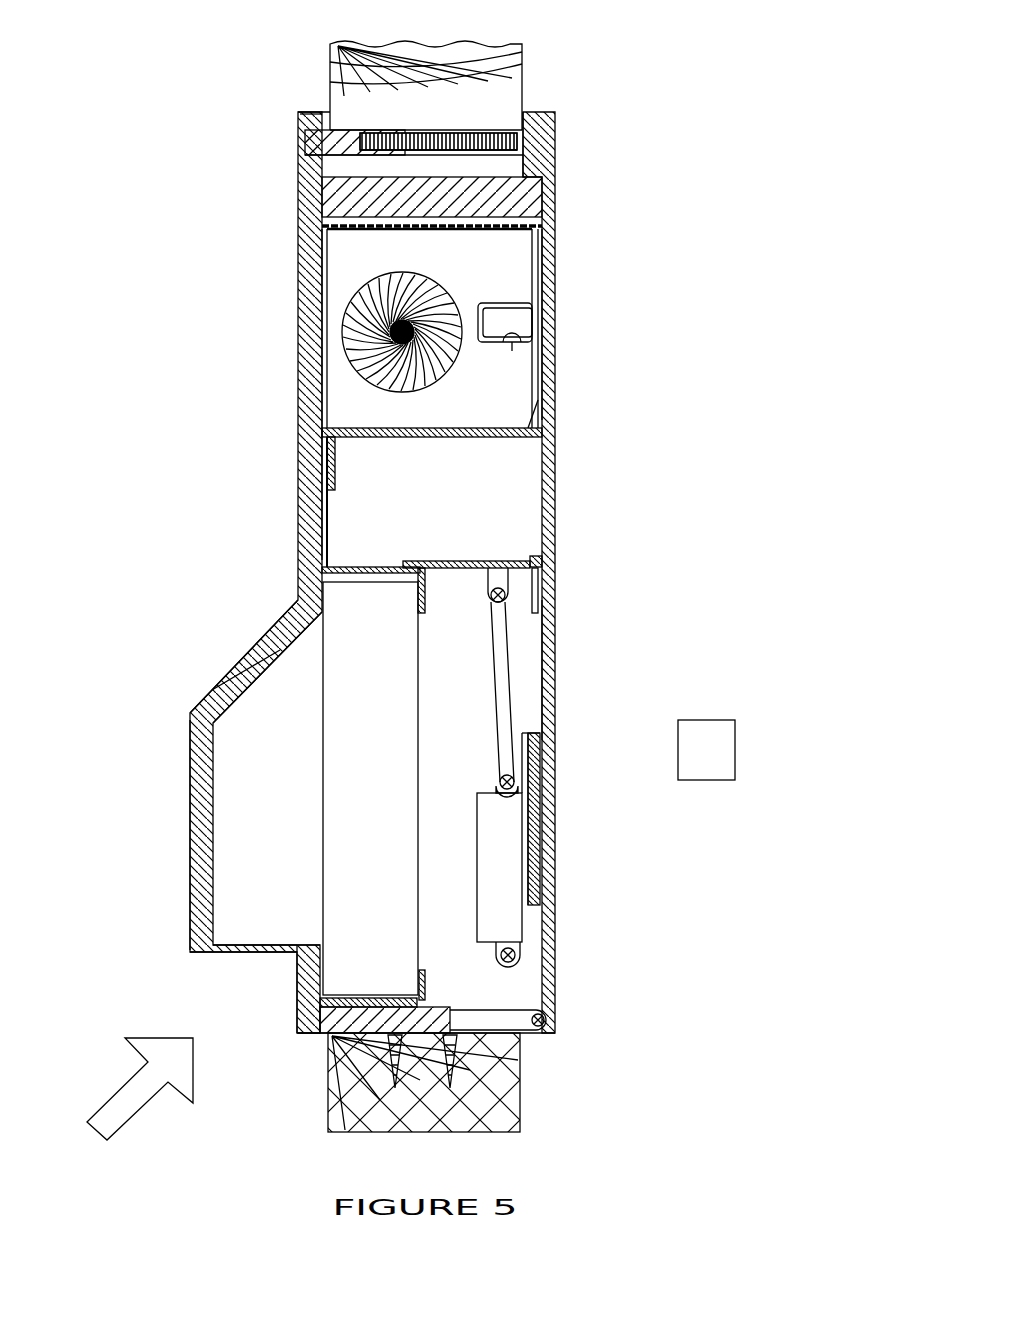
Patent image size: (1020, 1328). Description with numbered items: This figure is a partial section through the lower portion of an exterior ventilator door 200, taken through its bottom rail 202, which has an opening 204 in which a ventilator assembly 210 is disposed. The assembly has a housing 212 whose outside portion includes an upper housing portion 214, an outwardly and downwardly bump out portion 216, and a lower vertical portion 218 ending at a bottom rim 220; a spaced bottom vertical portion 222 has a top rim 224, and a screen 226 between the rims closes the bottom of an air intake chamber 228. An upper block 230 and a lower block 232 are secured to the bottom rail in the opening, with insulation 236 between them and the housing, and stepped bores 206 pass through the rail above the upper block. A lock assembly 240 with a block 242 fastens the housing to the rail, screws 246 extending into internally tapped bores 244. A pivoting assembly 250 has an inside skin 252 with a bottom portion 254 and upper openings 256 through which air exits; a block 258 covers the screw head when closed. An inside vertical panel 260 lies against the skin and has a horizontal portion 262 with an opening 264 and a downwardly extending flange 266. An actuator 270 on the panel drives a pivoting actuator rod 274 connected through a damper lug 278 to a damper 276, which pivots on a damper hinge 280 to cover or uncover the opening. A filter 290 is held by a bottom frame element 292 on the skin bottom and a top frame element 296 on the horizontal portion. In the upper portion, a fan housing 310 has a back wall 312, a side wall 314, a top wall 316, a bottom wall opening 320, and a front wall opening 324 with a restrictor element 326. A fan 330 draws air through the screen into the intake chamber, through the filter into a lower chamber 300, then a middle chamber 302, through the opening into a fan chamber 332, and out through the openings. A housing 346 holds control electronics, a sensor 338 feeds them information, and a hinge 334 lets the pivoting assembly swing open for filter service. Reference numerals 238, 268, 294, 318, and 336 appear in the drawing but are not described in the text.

The exterior ventilator door 200 is at (522, 48).
The bottom rail 202 is at (516, 92).
The opening 204 is at (530, 190).
The stepped bores 206 is at (365, 130).
The ventilator assembly 210 is at (298, 275).
The housing 212 is at (298, 313).
The upper housing portion 214 is at (305, 344).
The bump out portion 216 is at (262, 637).
The lower vertical portion 218 is at (190, 832).
The bottom rim 220 is at (213, 948).
The bottom vertical portion 222 is at (297, 975).
The top rim 224 is at (297, 948).
The screen 226 is at (232, 950).
The air intake chamber 228 is at (255, 730).
The upper block 230 is at (340, 190).
The lower block 232 is at (320, 1025).
The insulation 236 is at (305, 238).
The bottom outer corner 238 is at (293, 1000).
The lock assembly 240 is at (305, 118).
The block 242 is at (305, 152).
The internally tapped bores 244 is at (405, 135).
The screws 246 is at (472, 135).
The pivoting assembly 250 is at (557, 620).
The inside skin 252 is at (557, 580).
The bottom portion 254 is at (557, 985).
The openings 256 is at (548, 265).
The block 258 is at (548, 126).
The inside vertical panel 260 is at (548, 710).
The horizontal portion 262 is at (327, 432).
The opening 264 is at (370, 428).
The downwardly extending flange 266 is at (337, 470).
The rear wall middle portion 268 is at (300, 500).
The actuator 270 is at (515, 915).
The pivoting actuator rod 274 is at (512, 675).
The damper 276 is at (432, 560).
The damper lug 278 is at (482, 600).
The damper hinge 280 is at (545, 560).
The filter 290 is at (320, 848).
The bottom frame element 292 is at (340, 1000).
The bottom stop 294 is at (425, 975).
The top frame element 296 is at (418, 585).
The lower chamber 300 is at (478, 735).
The middle chamber 302 is at (492, 455).
The fan housing 310 is at (327, 248).
The back wall 312 is at (327, 393).
The side wall 314 is at (484, 407).
The top wall 316 is at (452, 228).
The inner wall lower end 318 is at (538, 395).
The opening 320 is at (538, 352).
The opening 324 is at (500, 354).
The restrictor element 326 is at (500, 303).
The fan 330 is at (345, 360).
The fan chamber 332 is at (425, 418).
The hinge 334 is at (550, 1018).
The motor bracket 336 is at (532, 812).
The sensor 338 is at (705, 720).
The housing 346 is at (532, 885).